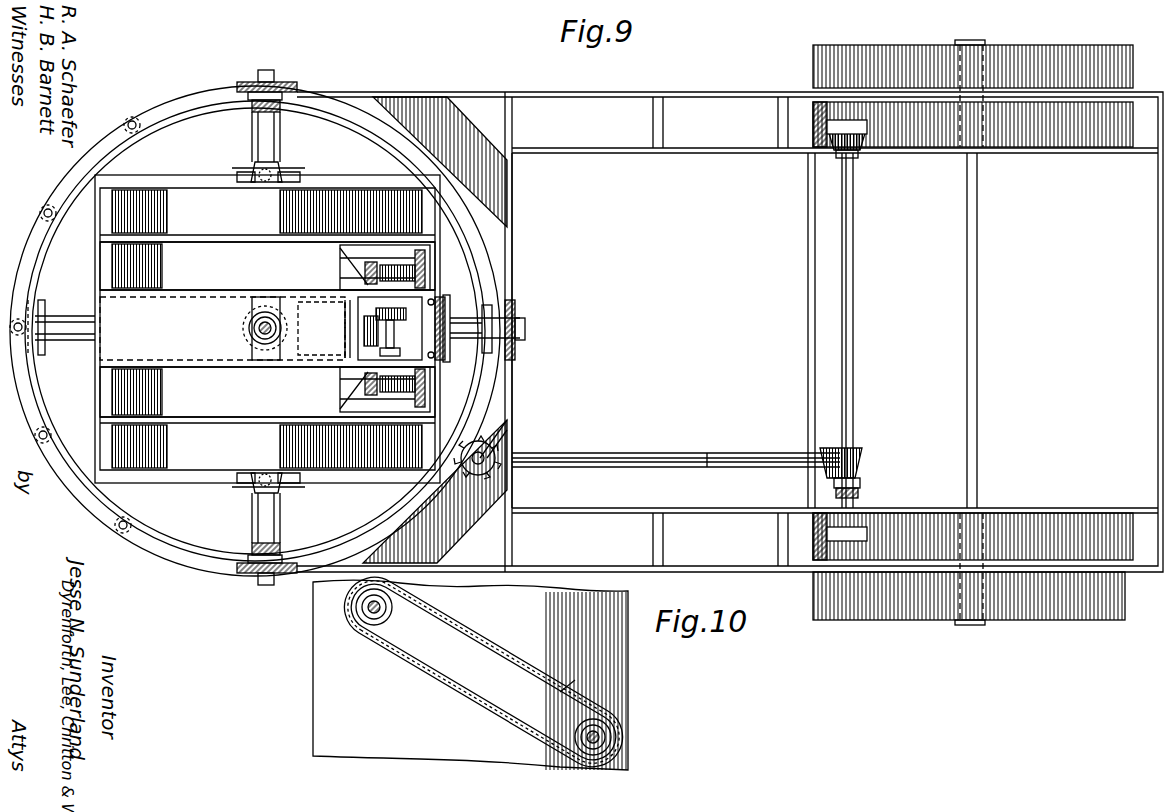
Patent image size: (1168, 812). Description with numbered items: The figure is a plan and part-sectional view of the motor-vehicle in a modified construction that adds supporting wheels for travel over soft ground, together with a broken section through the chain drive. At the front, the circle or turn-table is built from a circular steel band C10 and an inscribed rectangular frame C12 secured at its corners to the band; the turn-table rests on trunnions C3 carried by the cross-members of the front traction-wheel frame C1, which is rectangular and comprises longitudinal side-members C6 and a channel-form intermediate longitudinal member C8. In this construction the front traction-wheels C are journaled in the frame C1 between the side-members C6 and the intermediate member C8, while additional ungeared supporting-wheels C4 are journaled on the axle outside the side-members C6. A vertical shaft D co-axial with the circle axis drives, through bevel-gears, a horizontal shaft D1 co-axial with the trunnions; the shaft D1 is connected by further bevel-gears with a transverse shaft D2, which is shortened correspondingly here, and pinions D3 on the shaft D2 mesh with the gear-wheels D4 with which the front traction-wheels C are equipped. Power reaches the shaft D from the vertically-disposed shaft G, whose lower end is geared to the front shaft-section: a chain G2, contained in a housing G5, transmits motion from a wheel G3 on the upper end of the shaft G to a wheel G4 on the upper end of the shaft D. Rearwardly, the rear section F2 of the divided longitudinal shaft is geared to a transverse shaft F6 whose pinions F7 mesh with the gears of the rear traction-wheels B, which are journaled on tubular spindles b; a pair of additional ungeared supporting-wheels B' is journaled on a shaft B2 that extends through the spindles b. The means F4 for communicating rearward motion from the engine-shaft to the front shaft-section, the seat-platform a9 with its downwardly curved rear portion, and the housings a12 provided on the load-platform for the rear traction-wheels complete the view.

In FIG. 9, the rear traction-wheels B is at (973, 331).
In FIG. 9, the additional supporting-wheels B' is at (973, 332).
In FIG. 9, the shaft B2 is at (980, 335).
In FIG. 9, the tubular spindles b is at (988, 155).
In FIG. 9, the front traction-wheels C is at (267, 329).
In FIG. 9, the front traction-wheel frame C1 is at (100, 315).
In FIG. 9, the trunnions C3 is at (245, 178).
In FIG. 9, the additional supporting-wheels C4 is at (222, 520).
In FIG. 9, the longitudinal side-members C6 is at (163, 244).
In FIG. 9, the channel-form intermediate longitudinal member C8 is at (222, 328).
In FIG. 9, the circular steel band C10 is at (387, 128).
In FIG. 9, the inscribed rectangular frame C12 is at (330, 177).
In FIG. 9, the vertical shaft D is at (250, 328).
In FIG. 10, the vertical shaft D is at (366, 617).
In FIG. 9, the horizontal shaft D1 is at (352, 332).
In FIG. 9, the transverse shaft D2 is at (441, 328).
In FIG. 9, the pinions D3 is at (420, 282).
In FIG. 9, the gear-wheels D4 is at (360, 280).
In FIG. 9, the rear section F2 is at (773, 444).
In FIG. 9, the means for communicating motion rearwardly F4 is at (575, 455).
In FIG. 9, the transverse shaft F6 is at (856, 350).
In FIG. 9, the pinions F7 is at (856, 158).
In FIG. 10, the vertically-disposed shaft G is at (612, 728).
In FIG. 10, the chain G2 is at (556, 667).
In FIG. 10, the wheel G3 is at (630, 766).
In FIG. 10, the wheel G4 is at (385, 592).
In FIG. 10, the housing G5 is at (565, 690).
In FIG. 10, the seat-platform a9 is at (470, 675).
In FIG. 9, the housings a12 is at (435, 330).